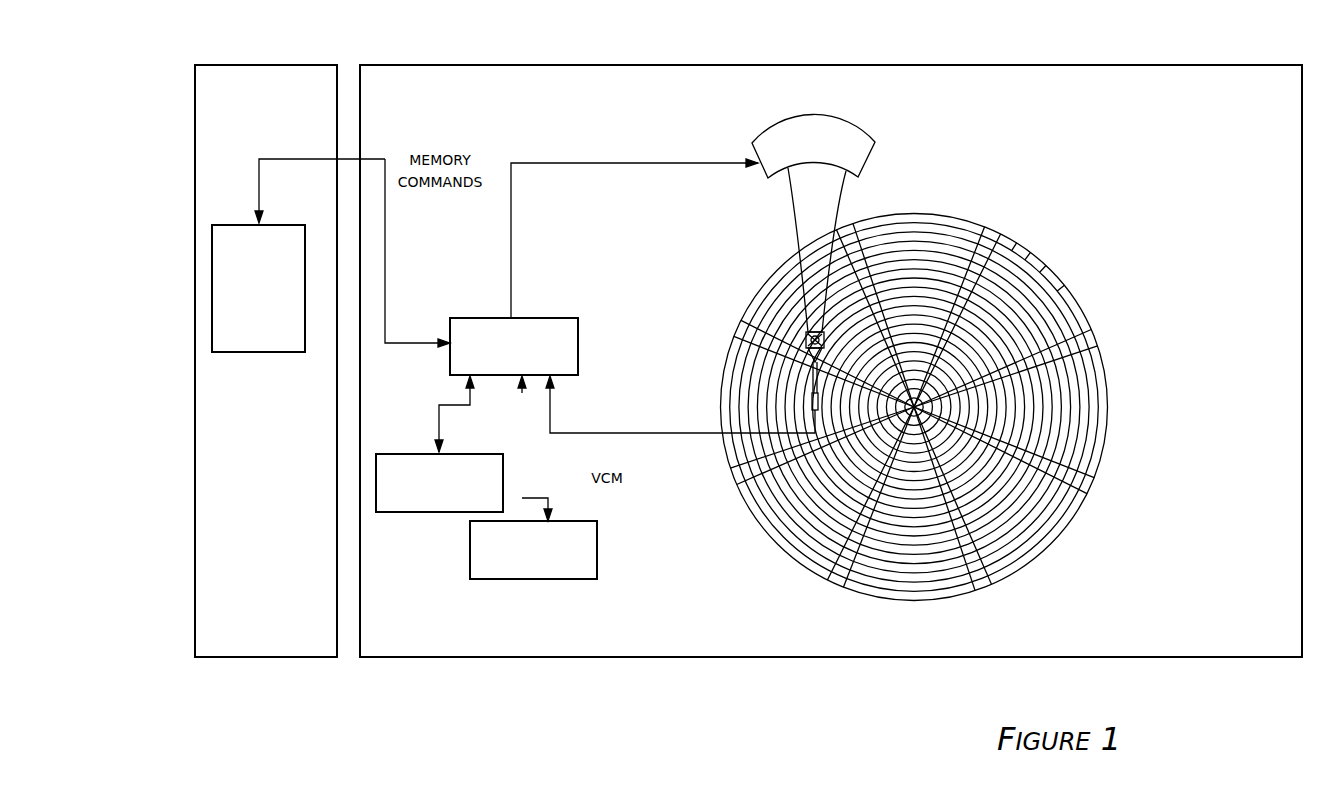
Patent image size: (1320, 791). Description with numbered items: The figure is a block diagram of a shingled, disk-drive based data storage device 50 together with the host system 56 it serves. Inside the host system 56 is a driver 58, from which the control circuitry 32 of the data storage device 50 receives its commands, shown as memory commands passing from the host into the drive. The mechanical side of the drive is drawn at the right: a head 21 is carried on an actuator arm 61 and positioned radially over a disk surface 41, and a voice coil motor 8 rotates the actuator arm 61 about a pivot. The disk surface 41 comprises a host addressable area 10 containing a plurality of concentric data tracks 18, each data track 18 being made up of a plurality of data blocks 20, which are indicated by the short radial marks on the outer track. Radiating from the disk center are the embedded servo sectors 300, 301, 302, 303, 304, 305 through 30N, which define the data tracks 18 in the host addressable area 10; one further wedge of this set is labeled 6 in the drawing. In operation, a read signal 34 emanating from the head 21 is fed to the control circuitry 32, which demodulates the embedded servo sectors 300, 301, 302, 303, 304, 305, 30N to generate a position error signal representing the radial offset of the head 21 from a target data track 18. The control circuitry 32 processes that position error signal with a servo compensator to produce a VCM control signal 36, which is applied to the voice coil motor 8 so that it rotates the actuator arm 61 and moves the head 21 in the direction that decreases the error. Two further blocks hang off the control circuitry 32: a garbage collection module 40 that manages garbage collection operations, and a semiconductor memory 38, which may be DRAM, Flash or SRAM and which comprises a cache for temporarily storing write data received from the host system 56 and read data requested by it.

The host system 56 is at (264, 64).
The data storage device 50 is at (450, 64).
The driver 58 is at (262, 352).
The VCM control signal 36 is at (511, 266).
The control circuitry 32 is at (551, 318).
The read signal 34 is at (628, 433).
The garbage collection module 40 is at (423, 512).
The semiconductor memory 38 is at (581, 579).
The voice coil motor 8 is at (769, 178).
The actuator arm 61 is at (799, 228).
The head 21 is at (797, 396).
The host addressable area 10 is at (927, 404).
The data tracks 18 is at (921, 224).
The data blocks 20 is at (1018, 238).
The embedded servo sector 300 is at (994, 229).
The embedded servo sector 301 is at (1097, 337).
The embedded servo sector 302 is at (1090, 484).
The embedded servo sector 303 is at (983, 588).
The embedded servo sector 304 is at (836, 585).
The embedded servo sector 305 is at (733, 480).
The embedded servo sector 30N is at (847, 229).
The servo sector 6 is at (738, 323).
The disk surface 41 is at (1118, 368).